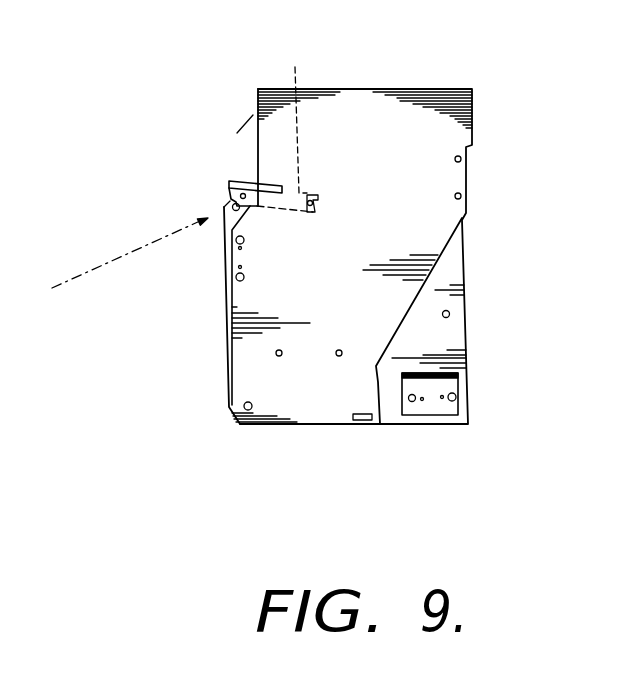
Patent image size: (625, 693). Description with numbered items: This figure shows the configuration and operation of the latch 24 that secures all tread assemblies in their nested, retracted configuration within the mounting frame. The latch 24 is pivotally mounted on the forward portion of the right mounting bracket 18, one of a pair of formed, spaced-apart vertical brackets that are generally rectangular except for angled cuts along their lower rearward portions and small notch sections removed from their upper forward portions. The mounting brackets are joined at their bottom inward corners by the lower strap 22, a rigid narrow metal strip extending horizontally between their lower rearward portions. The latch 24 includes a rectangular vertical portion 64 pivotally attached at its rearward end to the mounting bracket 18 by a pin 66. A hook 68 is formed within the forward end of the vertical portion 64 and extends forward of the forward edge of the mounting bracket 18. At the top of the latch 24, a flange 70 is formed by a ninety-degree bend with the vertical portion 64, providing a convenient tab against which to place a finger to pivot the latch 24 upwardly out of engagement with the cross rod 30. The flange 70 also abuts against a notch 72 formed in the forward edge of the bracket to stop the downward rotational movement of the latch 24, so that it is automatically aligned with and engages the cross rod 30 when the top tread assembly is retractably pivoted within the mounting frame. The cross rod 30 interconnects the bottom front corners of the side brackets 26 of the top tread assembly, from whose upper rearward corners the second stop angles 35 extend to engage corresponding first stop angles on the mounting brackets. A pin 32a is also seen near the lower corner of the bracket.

The mounting bracket 18 is at (380, 193).
The side bracket 26 is at (457, 335).
The flange 70 is at (242, 183).
The notch 72 is at (212, 177).
The latch 24 is at (228, 191).
The hook 68 is at (226, 202).
The cross rod 30 is at (221, 216).
The vertical portion 64 is at (296, 66).
The pin 66 is at (312, 195).
The lower corner hole 32a is at (229, 407).
The lower strap 22 is at (363, 420).
The second stop angle 35 is at (442, 413).